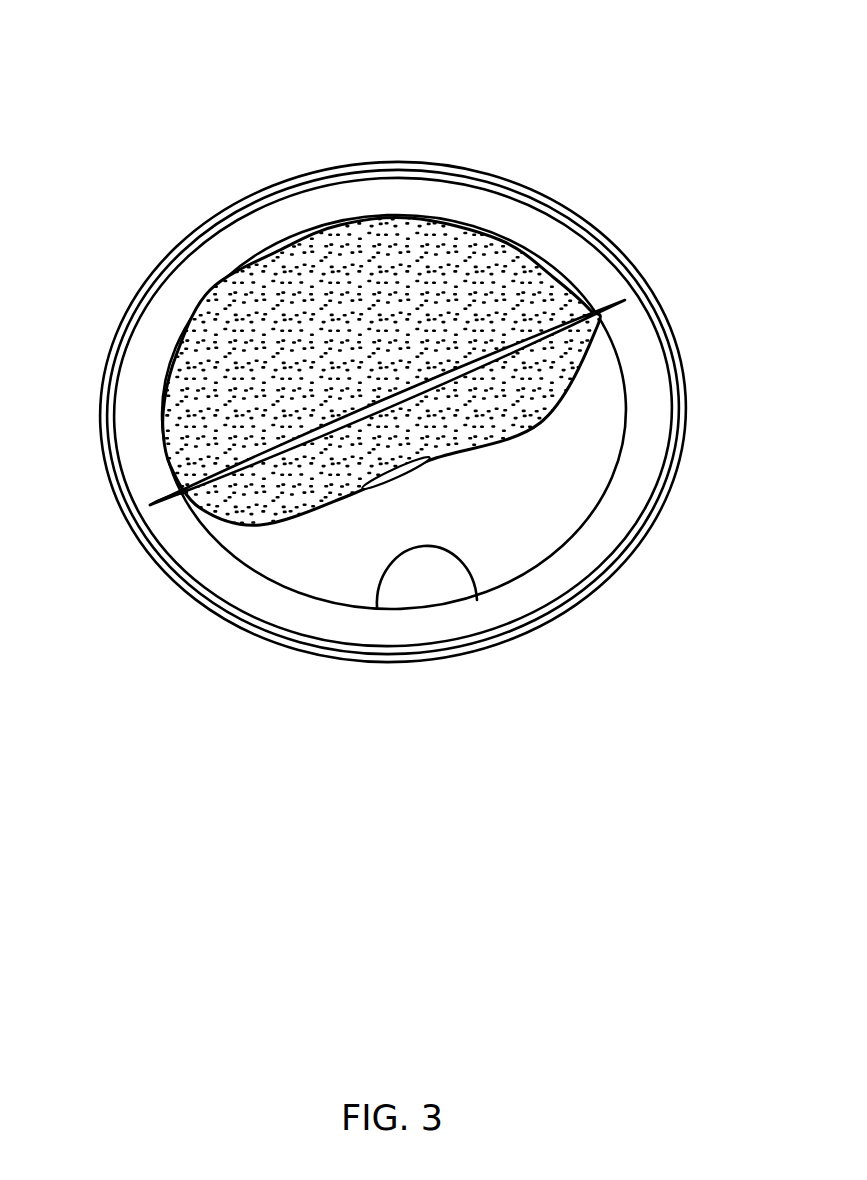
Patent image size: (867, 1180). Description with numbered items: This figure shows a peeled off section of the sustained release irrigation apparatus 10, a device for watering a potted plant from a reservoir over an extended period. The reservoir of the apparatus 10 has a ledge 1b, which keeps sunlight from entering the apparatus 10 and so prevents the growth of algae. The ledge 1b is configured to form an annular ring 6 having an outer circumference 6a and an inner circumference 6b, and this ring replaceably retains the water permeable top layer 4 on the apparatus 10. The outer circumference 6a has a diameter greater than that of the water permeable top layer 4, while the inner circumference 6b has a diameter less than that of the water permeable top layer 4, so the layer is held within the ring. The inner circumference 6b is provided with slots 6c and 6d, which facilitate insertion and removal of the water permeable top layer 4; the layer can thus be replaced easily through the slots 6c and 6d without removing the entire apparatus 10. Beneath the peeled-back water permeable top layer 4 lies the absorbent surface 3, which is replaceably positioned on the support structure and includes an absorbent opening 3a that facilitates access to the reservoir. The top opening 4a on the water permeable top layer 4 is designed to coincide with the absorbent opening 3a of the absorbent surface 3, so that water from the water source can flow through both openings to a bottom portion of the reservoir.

The sustained release irrigation apparatus 10 is at (455, 78).
The ledge 1b is at (102, 360).
The absorbent surface 3 is at (565, 512).
The absorbent opening 3a is at (477, 567).
The water permeable top layer 4 is at (235, 318).
The top opening 4a is at (360, 488).
The annular ring 6 is at (295, 222).
The outer circumference 6a is at (550, 218).
The inner circumference 6b is at (625, 422).
The slot 6c is at (622, 297).
The slot 6d is at (150, 506).